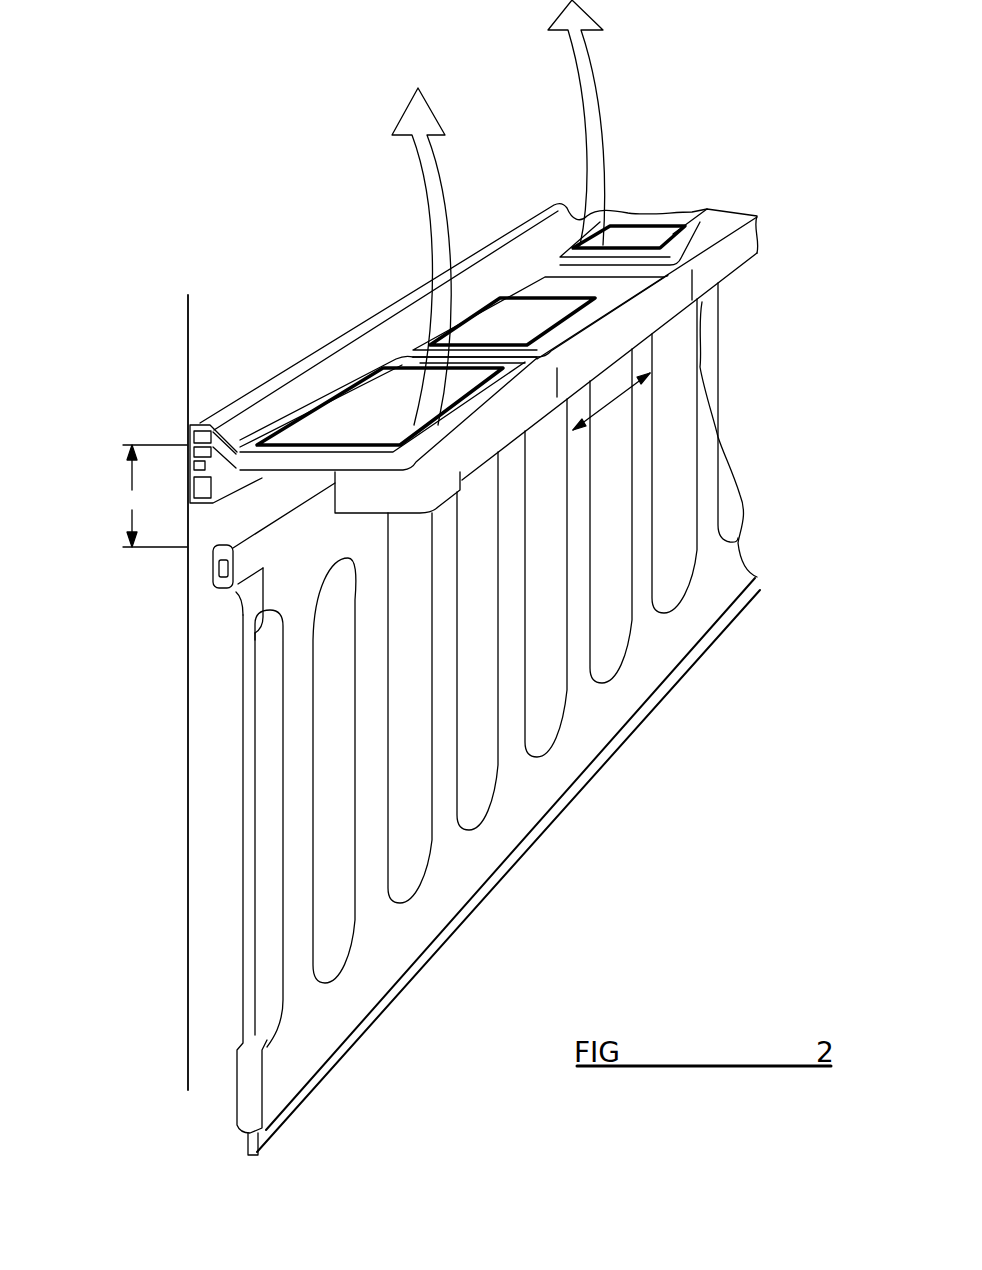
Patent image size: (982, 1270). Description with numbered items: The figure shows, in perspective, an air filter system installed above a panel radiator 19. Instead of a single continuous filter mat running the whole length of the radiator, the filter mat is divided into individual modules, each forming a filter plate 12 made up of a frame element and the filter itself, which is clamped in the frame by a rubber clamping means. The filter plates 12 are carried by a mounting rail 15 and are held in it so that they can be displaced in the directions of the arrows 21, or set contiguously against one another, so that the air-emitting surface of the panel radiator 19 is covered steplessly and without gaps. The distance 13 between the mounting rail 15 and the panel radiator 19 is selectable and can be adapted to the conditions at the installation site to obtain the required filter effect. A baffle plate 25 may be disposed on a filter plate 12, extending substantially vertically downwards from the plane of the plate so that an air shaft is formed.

The filter plate 12 is at (513, 382).
The distance 13 is at (138, 497).
The mounting rail 15 is at (271, 382).
The panel radiator 19 is at (433, 907).
The arrows 21 is at (617, 398).
The baffle plate 25 is at (462, 458).